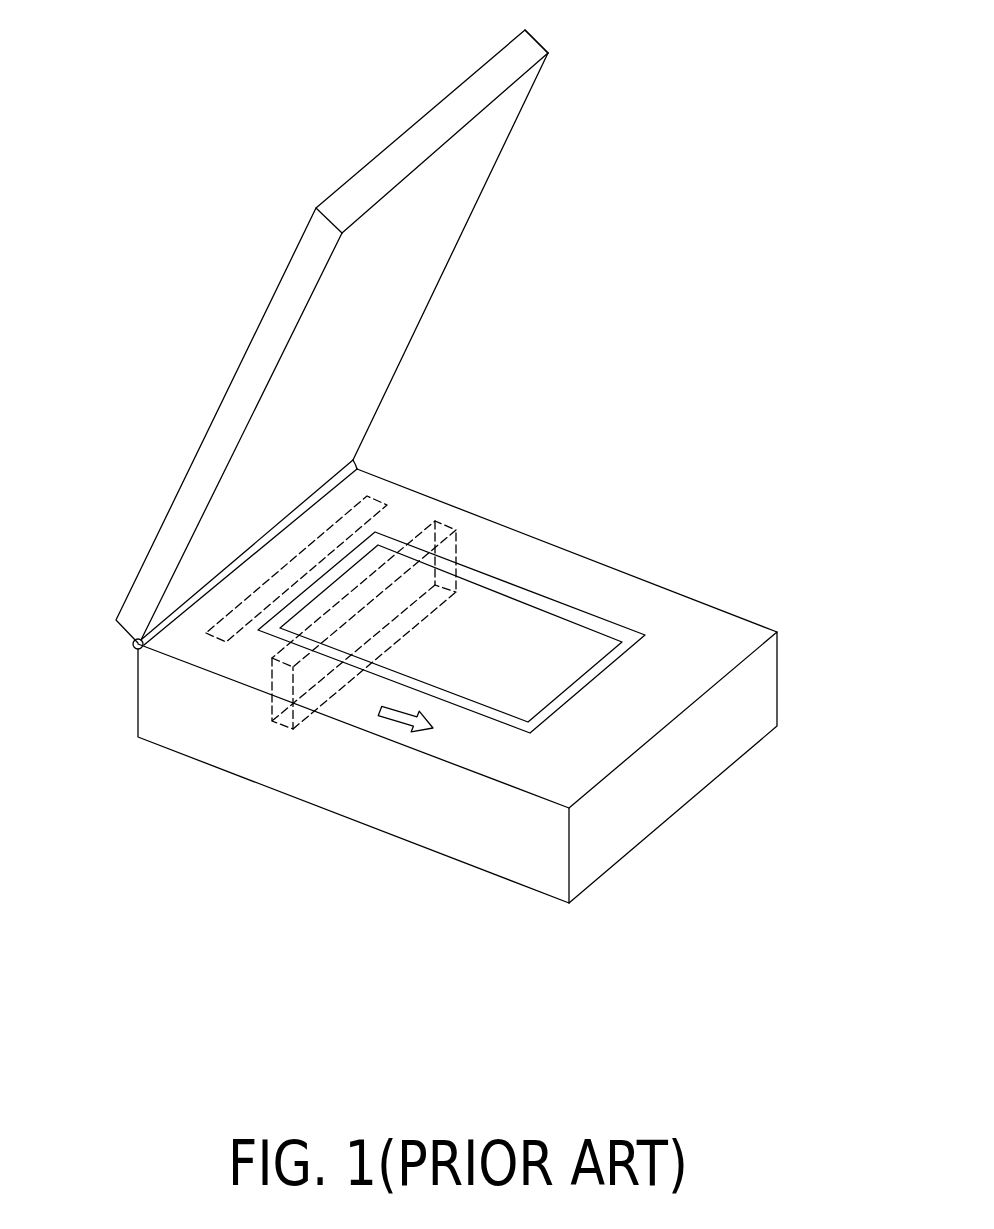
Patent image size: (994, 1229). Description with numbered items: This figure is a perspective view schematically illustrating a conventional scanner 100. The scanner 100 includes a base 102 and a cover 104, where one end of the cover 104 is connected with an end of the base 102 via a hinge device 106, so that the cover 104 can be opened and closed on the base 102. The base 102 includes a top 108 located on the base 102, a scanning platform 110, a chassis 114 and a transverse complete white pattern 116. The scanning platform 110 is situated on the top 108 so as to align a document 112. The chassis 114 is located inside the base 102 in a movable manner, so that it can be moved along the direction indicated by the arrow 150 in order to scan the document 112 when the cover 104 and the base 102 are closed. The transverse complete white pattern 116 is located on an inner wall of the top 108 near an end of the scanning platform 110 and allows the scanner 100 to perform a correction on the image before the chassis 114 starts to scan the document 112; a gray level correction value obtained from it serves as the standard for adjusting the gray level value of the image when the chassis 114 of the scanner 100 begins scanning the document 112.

The scanner 100 is at (458, 496).
The base 102 is at (665, 786).
The cover 104 is at (250, 375).
The hinge device 106 is at (133, 648).
The top 108 is at (632, 598).
The scanning platform 110 is at (572, 618).
The document 112 is at (520, 687).
The chassis 114 is at (450, 528).
The transverse complete white pattern 116 is at (372, 500).
The sliding direction arrow 150 is at (397, 717).